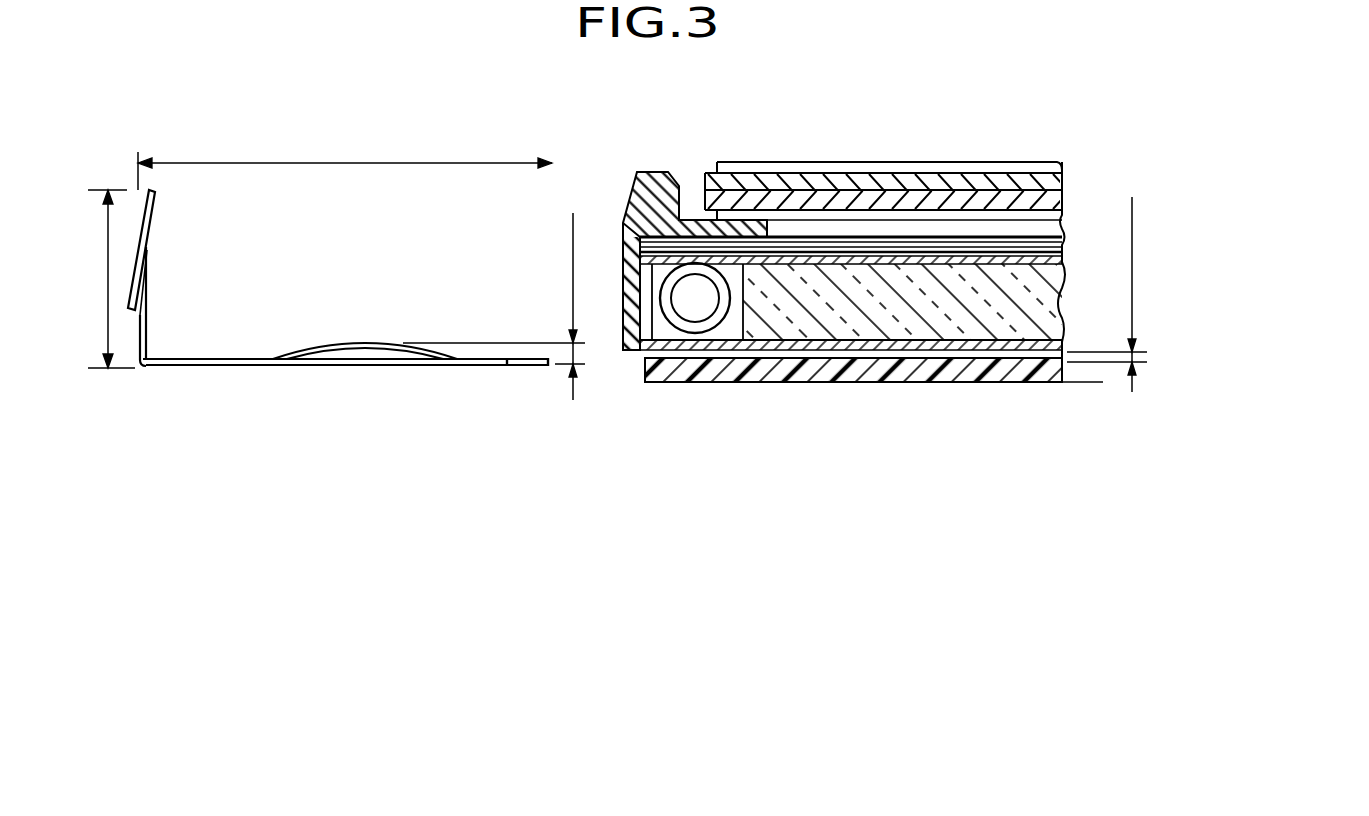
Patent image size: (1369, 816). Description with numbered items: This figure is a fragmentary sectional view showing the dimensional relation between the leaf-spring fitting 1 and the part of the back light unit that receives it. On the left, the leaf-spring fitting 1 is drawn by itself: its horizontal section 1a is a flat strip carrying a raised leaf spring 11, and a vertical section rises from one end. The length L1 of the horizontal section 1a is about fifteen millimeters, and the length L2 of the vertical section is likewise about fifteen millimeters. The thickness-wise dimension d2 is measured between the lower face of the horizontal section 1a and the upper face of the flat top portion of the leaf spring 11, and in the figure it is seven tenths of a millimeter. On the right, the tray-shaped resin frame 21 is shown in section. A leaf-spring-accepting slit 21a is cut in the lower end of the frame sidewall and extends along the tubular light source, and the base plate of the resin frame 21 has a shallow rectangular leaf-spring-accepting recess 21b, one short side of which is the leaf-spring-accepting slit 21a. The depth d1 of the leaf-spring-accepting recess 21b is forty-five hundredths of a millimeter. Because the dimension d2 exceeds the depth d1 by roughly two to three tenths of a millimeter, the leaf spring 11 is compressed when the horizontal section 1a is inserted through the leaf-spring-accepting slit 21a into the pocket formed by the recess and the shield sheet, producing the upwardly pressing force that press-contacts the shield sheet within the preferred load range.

The leaf-spring fitting 1 is at (173, 373).
The horizontal section 1a is at (500, 366).
The leaf spring 11 is at (367, 343).
The resin frame 21 is at (831, 376).
The leaf-spring-accepting slit 21a is at (632, 352).
The leaf-spring-accepting recess 21b is at (1043, 383).
The depth of the leaf-spring-accepting recess d1 is at (1143, 353).
The thickness-wise dimension of the horizontal section d2 is at (583, 352).
The length of the horizontal section L1 is at (345, 160).
The length of the vertical section L2 is at (99, 279).